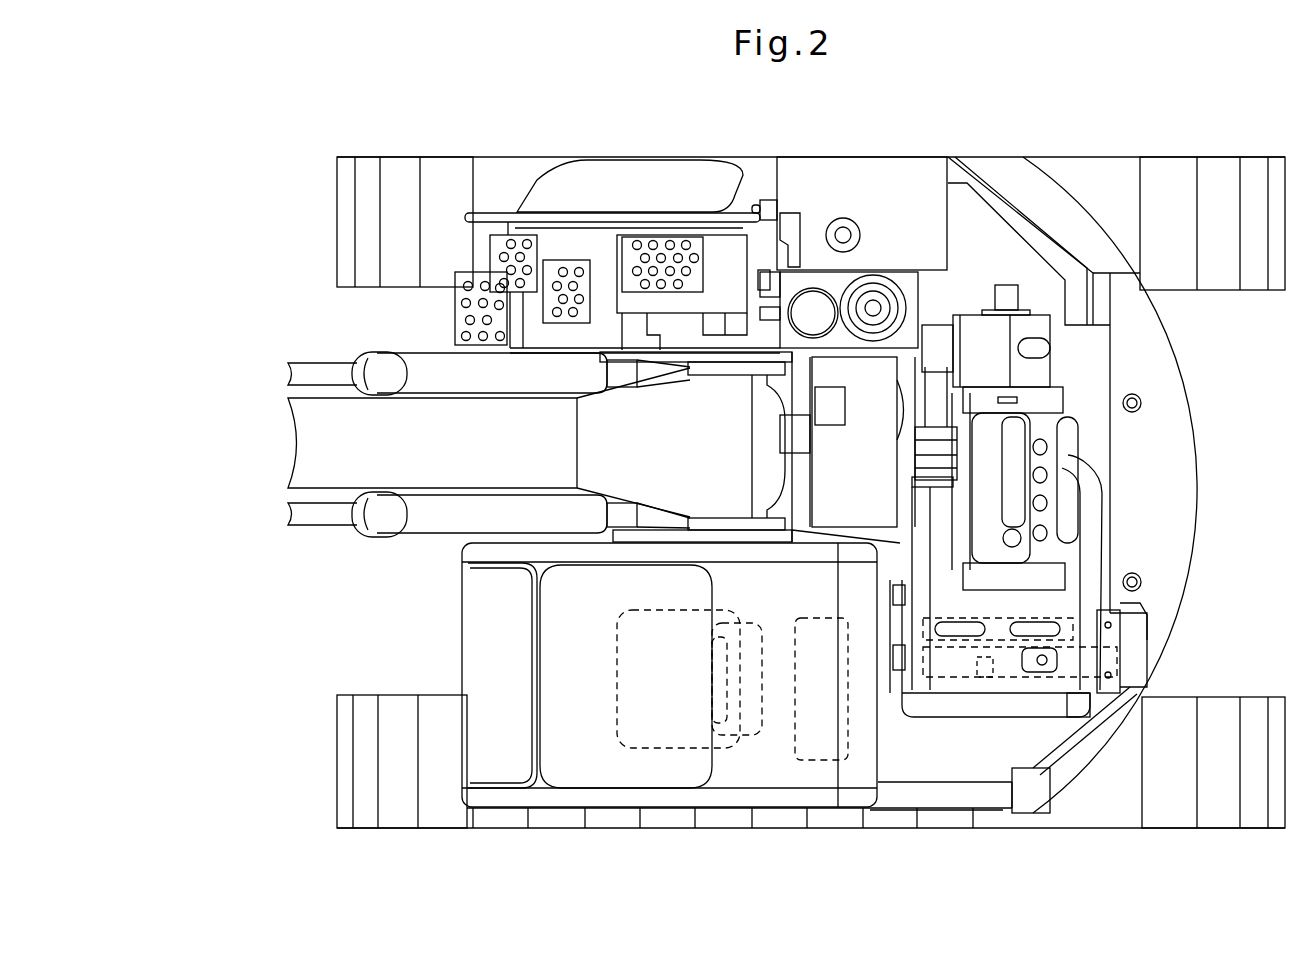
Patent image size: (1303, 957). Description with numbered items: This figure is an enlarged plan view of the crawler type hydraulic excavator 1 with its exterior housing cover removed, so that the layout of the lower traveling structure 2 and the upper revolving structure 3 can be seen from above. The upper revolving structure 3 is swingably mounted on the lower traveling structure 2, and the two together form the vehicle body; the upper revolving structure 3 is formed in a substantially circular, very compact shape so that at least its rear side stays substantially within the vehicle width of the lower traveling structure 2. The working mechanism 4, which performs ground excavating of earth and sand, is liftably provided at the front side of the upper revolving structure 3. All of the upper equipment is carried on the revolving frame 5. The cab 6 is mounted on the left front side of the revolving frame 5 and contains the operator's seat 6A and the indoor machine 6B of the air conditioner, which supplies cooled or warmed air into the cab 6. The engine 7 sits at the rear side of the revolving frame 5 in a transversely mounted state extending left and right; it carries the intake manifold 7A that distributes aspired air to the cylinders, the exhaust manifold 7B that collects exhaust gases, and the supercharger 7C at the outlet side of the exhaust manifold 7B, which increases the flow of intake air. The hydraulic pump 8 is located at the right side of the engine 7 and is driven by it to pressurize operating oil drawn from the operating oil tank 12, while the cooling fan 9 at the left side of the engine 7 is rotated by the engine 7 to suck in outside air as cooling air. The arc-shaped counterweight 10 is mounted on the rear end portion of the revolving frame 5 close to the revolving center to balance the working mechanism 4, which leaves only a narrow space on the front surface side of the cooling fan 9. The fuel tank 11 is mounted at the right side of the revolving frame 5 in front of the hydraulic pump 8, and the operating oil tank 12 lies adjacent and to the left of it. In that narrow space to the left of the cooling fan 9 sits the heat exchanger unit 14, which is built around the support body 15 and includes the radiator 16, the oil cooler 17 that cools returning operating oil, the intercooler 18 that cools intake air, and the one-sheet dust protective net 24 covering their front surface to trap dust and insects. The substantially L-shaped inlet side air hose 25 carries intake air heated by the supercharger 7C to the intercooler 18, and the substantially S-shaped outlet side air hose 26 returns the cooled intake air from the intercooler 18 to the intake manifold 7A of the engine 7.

The hydraulic excavator 1 is at (707, 148).
The lower traveling structure 2 is at (492, 173).
The upper revolving structure 3 is at (749, 145).
The working mechanism 4 is at (333, 440).
The revolving frame 5 is at (662, 355).
The cab 6 is at (615, 802).
The operator's seat 6A is at (668, 735).
The indoor machine 6B is at (820, 737).
The engine 7 is at (1013, 437).
The intake manifold 7A is at (1067, 445).
The exhaust manifold 7B is at (933, 503).
The supercharger 7C is at (925, 452).
The hydraulic pump 8 is at (1012, 303).
The cooling fan 9 is at (1055, 632).
The counterweight 10 is at (1155, 497).
The fuel tank 11 is at (883, 190).
The operating oil tank 12 is at (810, 275).
The heat exchanger unit 14 is at (968, 730).
The support body 15 is at (987, 680).
The radiator 16 is at (1097, 657).
The oil cooler 17 is at (952, 663).
The intercooler 18 is at (1042, 705).
The dust protective net 24 is at (1023, 727).
The inlet side air hose 25 is at (900, 627).
The outlet side air hose 26 is at (1093, 548).